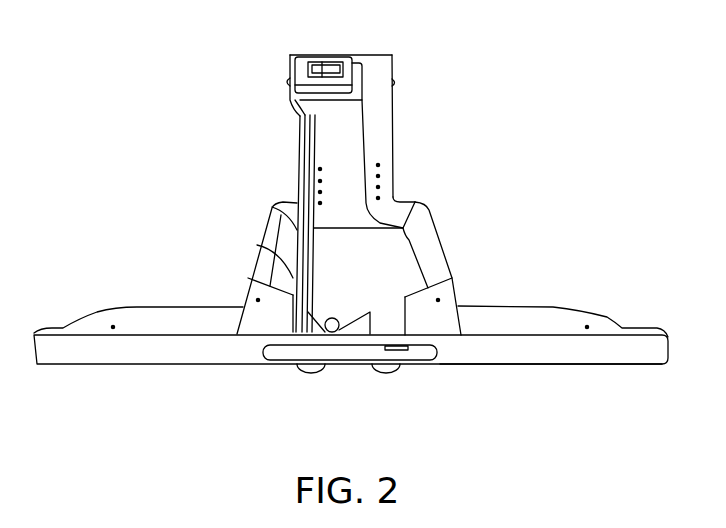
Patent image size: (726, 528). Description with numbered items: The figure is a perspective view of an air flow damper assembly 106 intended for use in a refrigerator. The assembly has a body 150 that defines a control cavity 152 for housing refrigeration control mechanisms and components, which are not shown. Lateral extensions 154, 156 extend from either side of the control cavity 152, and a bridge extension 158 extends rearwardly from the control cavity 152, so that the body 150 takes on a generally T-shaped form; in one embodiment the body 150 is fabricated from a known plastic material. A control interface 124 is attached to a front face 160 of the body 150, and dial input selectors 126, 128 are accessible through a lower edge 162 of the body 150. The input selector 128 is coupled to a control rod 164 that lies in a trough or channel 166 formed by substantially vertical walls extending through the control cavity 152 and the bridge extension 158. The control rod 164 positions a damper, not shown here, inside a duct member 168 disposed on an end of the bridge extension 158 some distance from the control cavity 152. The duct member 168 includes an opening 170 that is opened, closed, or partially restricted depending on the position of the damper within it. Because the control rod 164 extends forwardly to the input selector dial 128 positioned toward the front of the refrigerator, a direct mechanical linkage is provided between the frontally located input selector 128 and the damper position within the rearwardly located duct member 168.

The air flow damper assembly 106 is at (447, 37).
The control interface 124 is at (353, 353).
The dial input selector 126 is at (387, 370).
The dial input selector 128 is at (316, 371).
The body 150 is at (404, 141).
The control cavity 152 is at (408, 257).
The lateral extension 154 is at (545, 320).
The lateral extension 156 is at (140, 320).
The bridge extension 158 is at (353, 127).
The front face 160 is at (150, 355).
The lower edge 162 is at (505, 365).
The control rod 164 is at (272, 207).
The channel 166 is at (257, 245).
The duct member 168 is at (305, 62).
The opening 170 is at (325, 70).